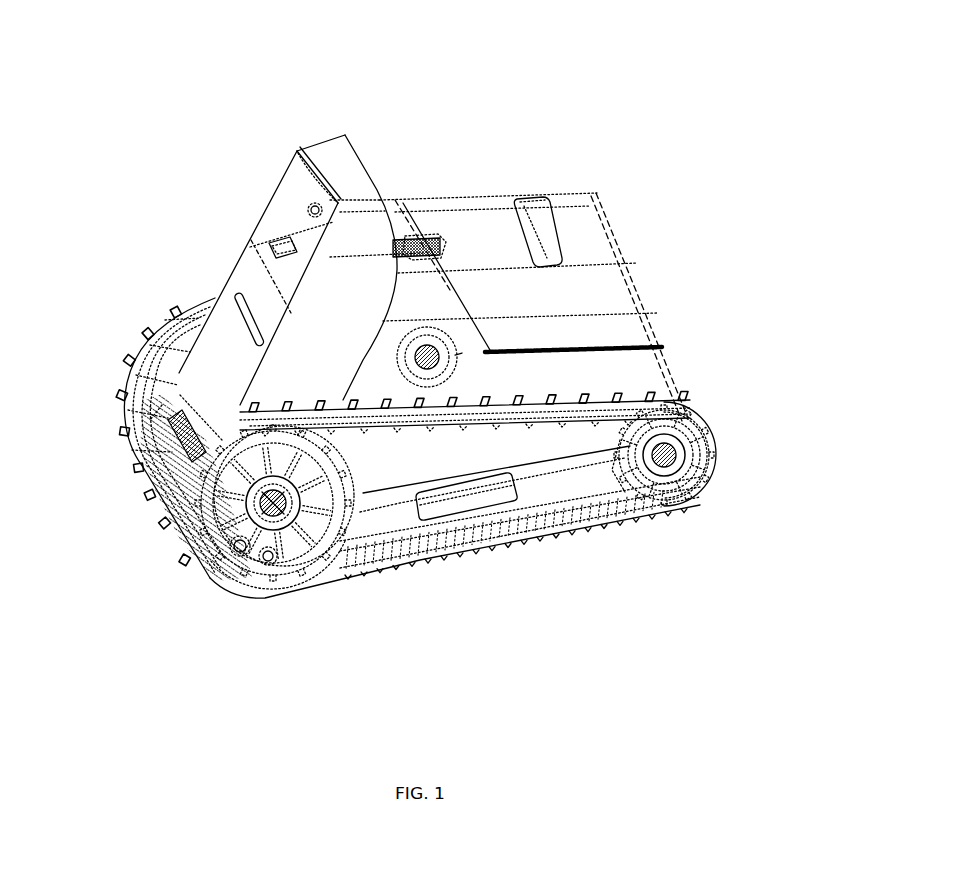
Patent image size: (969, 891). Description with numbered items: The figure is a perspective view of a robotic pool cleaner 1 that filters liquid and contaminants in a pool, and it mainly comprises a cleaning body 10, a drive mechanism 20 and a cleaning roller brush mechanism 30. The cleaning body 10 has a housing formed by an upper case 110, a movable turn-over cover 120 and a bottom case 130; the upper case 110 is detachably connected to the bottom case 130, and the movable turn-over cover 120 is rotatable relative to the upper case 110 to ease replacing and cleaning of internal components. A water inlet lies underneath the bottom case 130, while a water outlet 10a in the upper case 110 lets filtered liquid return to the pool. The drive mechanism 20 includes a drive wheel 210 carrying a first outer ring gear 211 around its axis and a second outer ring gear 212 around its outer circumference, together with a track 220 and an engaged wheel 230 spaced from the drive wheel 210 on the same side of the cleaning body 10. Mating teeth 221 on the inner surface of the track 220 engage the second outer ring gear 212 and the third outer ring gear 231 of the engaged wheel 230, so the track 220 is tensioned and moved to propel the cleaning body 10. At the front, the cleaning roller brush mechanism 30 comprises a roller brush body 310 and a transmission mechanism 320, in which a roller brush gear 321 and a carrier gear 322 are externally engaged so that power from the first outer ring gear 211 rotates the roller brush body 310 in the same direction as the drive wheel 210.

The robotic pool cleaner 1 is at (72, 39).
The cleaning body 10 is at (435, 347).
The upper case 110 is at (398, 228).
The water outlet 10a is at (424, 238).
The movable turn-over cover 120 is at (604, 250).
The bottom case 130 is at (529, 487).
The drive mechanism 20 is at (506, 464).
The mating teeth 221 is at (625, 432).
The drive wheel 210 is at (344, 541).
The first outer ring gear 211 is at (313, 507).
The second outer ring gear 212 is at (352, 500).
The track 220 is at (704, 497).
The engaged wheel 230 is at (685, 462).
The third outer ring gear 231 is at (628, 461).
The cleaning roller brush mechanism 30 is at (154, 497).
The roller brush body 310 is at (173, 443).
The transmission mechanism 320 is at (181, 616).
The roller brush gear 321 is at (240, 548).
The carrier gear 322 is at (266, 558).